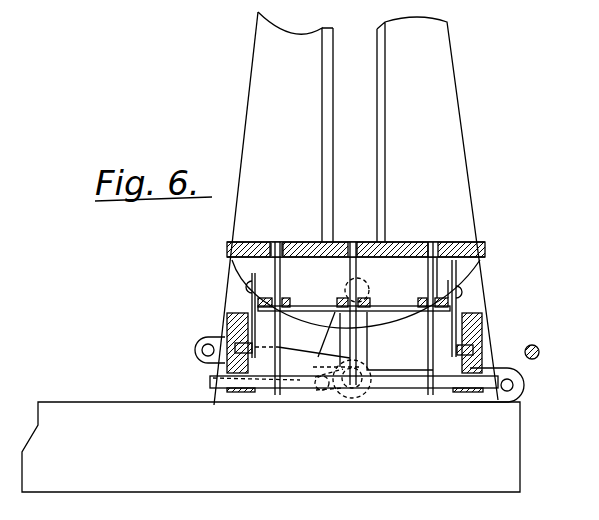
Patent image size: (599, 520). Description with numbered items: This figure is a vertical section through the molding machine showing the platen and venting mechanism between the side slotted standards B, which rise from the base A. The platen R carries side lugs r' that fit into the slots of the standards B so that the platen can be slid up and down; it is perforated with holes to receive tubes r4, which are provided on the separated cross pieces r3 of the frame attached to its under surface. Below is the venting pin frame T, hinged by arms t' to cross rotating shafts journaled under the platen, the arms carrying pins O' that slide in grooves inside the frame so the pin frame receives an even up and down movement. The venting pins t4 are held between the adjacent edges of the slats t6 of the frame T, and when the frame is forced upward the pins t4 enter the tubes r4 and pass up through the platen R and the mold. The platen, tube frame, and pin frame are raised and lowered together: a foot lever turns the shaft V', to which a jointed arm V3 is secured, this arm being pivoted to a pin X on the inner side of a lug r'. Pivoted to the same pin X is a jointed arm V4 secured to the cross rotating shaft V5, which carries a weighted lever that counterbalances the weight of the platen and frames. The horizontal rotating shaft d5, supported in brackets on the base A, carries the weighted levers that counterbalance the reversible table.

The side slotted standards B is at (296, 146).
The platen R is at (408, 242).
The tubes r4 is at (271, 242).
The venting pins t4 is at (281, 242).
The pin X is at (347, 290).
The side lugs r' is at (370, 290).
The cross pieces r3 is at (354, 302).
The arms t' is at (343, 308).
The venting pin frame T is at (227, 325).
The shaft V' is at (193, 355).
The pins O' is at (339, 361).
The jointed arm V4 is at (405, 364).
The jointed arm V3 is at (322, 363).
The slats t6 is at (393, 383).
The cross rotating shaft V5 is at (514, 385).
The horizontal rotating shaft d5 is at (546, 338).
The base A is at (268, 453).